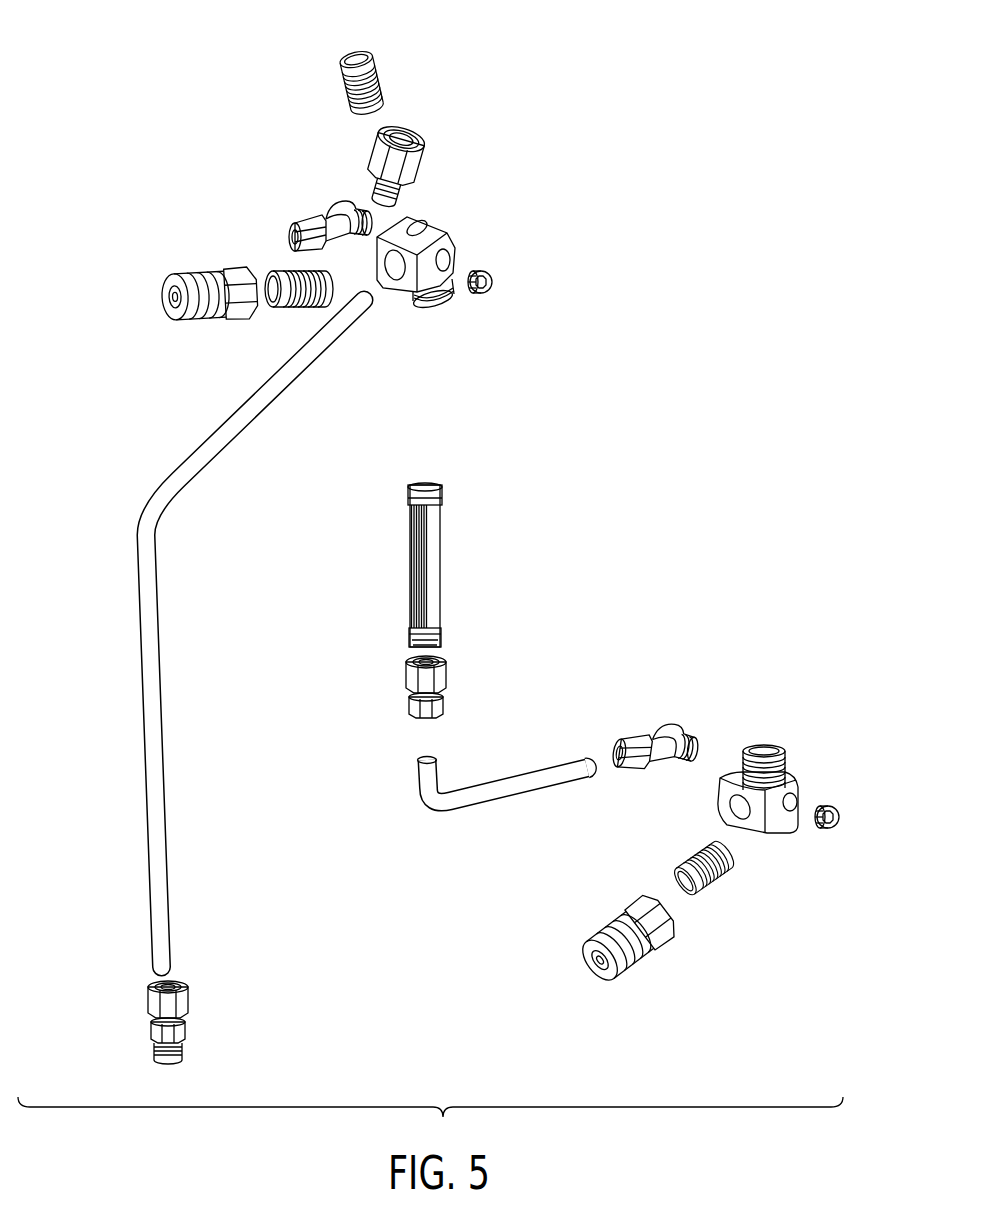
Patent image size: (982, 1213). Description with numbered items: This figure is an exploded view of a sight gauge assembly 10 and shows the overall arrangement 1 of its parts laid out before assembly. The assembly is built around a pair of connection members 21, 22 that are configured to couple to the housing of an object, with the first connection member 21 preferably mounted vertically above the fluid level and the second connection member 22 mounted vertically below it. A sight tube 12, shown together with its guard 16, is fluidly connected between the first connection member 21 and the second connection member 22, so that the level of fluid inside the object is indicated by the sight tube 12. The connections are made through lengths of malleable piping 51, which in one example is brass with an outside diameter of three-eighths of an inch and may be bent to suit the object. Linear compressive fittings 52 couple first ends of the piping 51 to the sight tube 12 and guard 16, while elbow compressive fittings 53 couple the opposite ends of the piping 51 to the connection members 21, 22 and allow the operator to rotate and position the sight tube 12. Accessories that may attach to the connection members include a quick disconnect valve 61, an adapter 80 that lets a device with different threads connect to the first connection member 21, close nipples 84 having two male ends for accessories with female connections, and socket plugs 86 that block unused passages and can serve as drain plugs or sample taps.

The fluid delivery assembly 1 is at (582, 121).
The sight gauge assembly 10 is at (620, 362).
The sight tube 12 is at (414, 572).
The guard 16 is at (432, 552).
The first connection member 21 is at (435, 232).
The second connection member 22 is at (793, 784).
The piping 51 is at (152, 790).
The linear compressive fitting 52 is at (462, 688).
The elbow compressive fitting 53 is at (298, 203).
The quick disconnect valve 61 is at (213, 270).
The adapter 80 is at (408, 155).
The close nipple 84 is at (383, 78).
The socket plug 86 is at (492, 286).